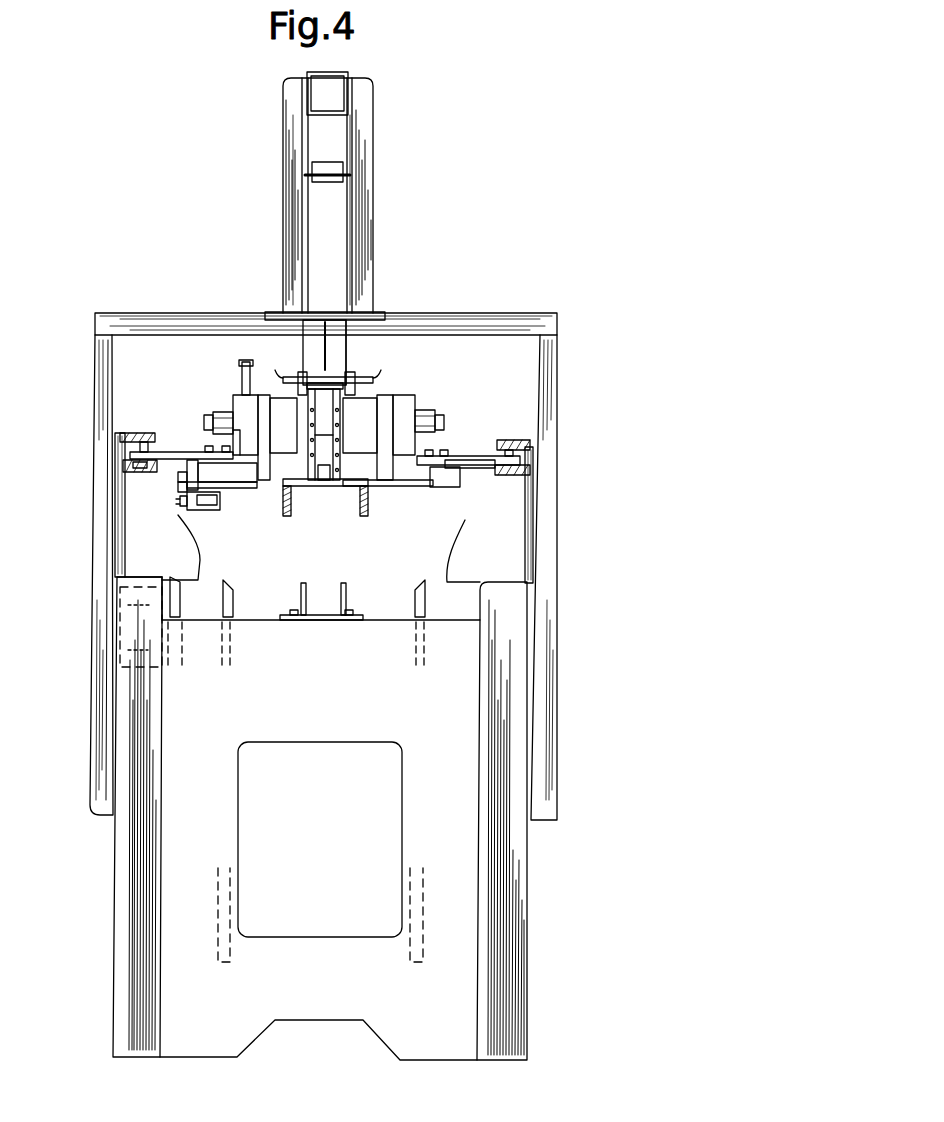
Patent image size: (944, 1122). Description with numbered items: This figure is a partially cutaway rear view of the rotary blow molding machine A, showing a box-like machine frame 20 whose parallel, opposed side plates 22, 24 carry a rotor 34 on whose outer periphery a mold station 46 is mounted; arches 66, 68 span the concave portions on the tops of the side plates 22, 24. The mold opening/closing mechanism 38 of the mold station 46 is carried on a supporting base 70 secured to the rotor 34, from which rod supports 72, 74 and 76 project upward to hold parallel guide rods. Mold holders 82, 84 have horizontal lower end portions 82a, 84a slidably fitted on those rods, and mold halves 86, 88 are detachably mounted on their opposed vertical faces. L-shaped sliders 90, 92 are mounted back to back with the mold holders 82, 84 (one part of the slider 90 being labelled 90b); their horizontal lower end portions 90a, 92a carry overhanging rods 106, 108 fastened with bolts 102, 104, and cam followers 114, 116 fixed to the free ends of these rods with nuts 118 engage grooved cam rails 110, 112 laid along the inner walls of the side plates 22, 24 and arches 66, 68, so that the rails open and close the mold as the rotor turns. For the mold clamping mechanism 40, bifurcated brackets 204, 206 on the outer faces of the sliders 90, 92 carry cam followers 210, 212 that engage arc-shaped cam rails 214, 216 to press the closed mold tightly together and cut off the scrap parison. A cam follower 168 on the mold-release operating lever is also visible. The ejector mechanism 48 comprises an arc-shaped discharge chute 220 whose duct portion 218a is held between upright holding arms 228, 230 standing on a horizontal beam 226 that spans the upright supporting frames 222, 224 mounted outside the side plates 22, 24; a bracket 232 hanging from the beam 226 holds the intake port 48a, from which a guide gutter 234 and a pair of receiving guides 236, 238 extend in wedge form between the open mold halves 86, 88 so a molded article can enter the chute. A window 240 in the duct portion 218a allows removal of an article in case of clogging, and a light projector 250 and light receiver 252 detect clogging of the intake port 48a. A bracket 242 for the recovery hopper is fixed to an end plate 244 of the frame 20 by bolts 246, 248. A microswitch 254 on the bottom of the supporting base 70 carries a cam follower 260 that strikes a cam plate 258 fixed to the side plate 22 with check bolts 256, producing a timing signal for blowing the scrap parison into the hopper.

The box-like frame 20 is at (80, 917).
The side plate 22 is at (135, 852).
The side plate 24 is at (510, 900).
The rotor 34 is at (325, 514).
The mold opening/closing mechanism 38 is at (480, 455).
The mold clamping mechanism 40 is at (476, 412).
The mold station 46 is at (443, 543).
The ejector mechanism 48 is at (249, 101).
The intake port 48a is at (352, 316).
The arch 66 is at (120, 518).
The arch 68 is at (532, 503).
The supporting base 70 is at (220, 478).
The rod support 72 is at (185, 480).
The rod support 74 is at (448, 470).
The rod support 76 is at (322, 481).
The mold holder 82 is at (262, 398).
The horizontal lower end portion 82a is at (262, 482).
The mold holder 84 is at (385, 398).
The horizontal lower end portion 84a is at (365, 468).
The mold half 86 is at (286, 425).
The mold half 88 is at (360, 425).
The L-shaped slider 90 is at (215, 342).
The horizontal lower end portion 90a is at (200, 500).
The slide part 90b is at (185, 330).
The L-shaped slider 92 is at (410, 400).
The horizontal lower end portion 92a is at (396, 466).
The bolt 102 is at (225, 448).
The bolt 104 is at (210, 445).
The overhanging rod 106 is at (178, 478).
The overhanging rod 108 is at (522, 472).
The grooved cam rail 110 is at (175, 578).
The grooved cam rail 112 is at (458, 580).
The cam follower 114 is at (120, 464).
The cam follower 116 is at (515, 471).
The nut 118 is at (133, 440).
The cam follower 168 is at (240, 370).
The bifurcated bracket 204 is at (235, 405).
The bifurcated bracket 206 is at (418, 420).
The cam follower 210 is at (228, 420).
The cam follower 212 is at (445, 423).
The cam rail 214 is at (228, 607).
The cam rail 216 is at (422, 602).
The arc-shaped duct portion 218a is at (323, 203).
The arc-shaped discharge chute 220 is at (335, 141).
The supporting frame 222 is at (95, 383).
The supporting frame 224 is at (550, 385).
The horizontal beam 226 is at (490, 318).
The holding arm 228 is at (292, 180).
The holding arm 230 is at (360, 193).
The bracket 232 is at (338, 320).
The guide gutter 234 is at (355, 382).
The receiving guide 236 is at (292, 500).
The receiving guide 238 is at (364, 500).
The window 240 is at (340, 166).
The bracket 242 is at (333, 614).
The end plate 244 is at (462, 716).
The bolt 246 is at (300, 600).
The bolt 248 is at (345, 600).
The light projector 250 is at (290, 378).
The light receiver 252 is at (357, 316).
The microswitch 254 is at (200, 506).
The check bolt 256 is at (120, 620).
The cam plate 258 is at (180, 600).
The cam follower 260 is at (183, 488).
The rotary blow molding machine A is at (503, 212).